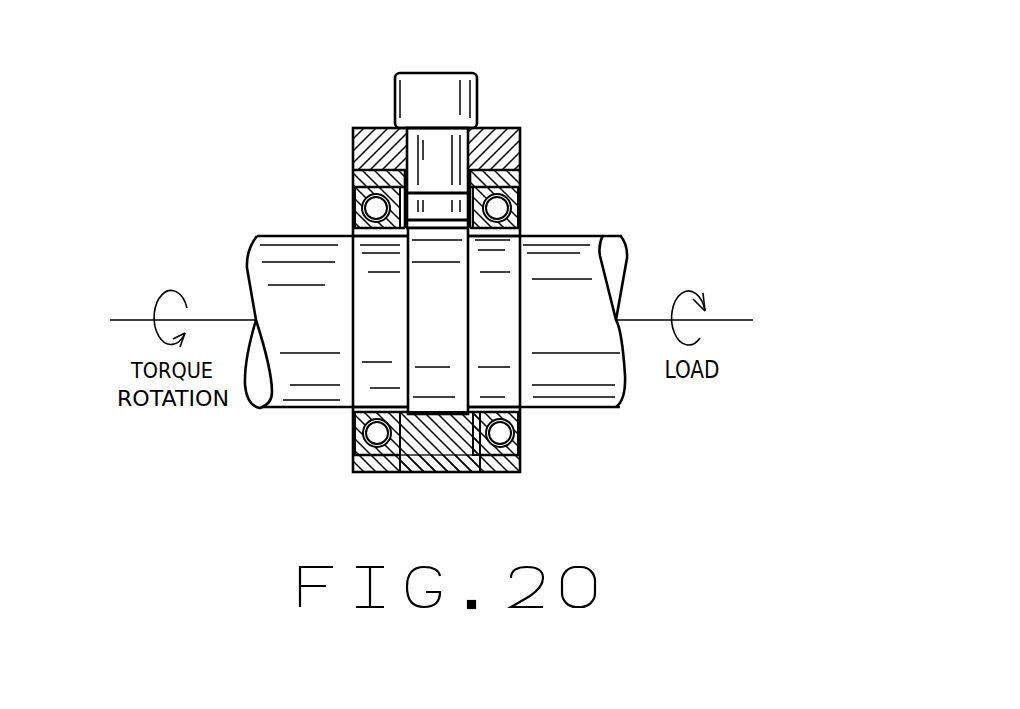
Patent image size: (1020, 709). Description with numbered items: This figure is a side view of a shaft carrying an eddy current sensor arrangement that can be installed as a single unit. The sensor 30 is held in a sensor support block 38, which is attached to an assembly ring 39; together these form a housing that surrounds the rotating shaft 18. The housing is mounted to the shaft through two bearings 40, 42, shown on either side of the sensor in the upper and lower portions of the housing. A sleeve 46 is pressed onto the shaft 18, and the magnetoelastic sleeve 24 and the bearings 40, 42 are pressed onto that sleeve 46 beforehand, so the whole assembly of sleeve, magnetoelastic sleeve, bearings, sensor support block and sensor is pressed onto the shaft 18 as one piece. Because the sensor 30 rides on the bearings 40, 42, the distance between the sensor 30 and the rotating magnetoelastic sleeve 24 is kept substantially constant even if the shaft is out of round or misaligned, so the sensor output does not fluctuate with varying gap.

The shaft 18 is at (608, 407).
The magnetoelastic sleeve 24 is at (448, 393).
The sensor 30 is at (470, 73).
The sensor support block 38 is at (520, 130).
The assembly ring 39 is at (490, 472).
The bearing 40 is at (520, 193).
The bearing 42 is at (357, 187).
The sleeve 46 is at (512, 367).